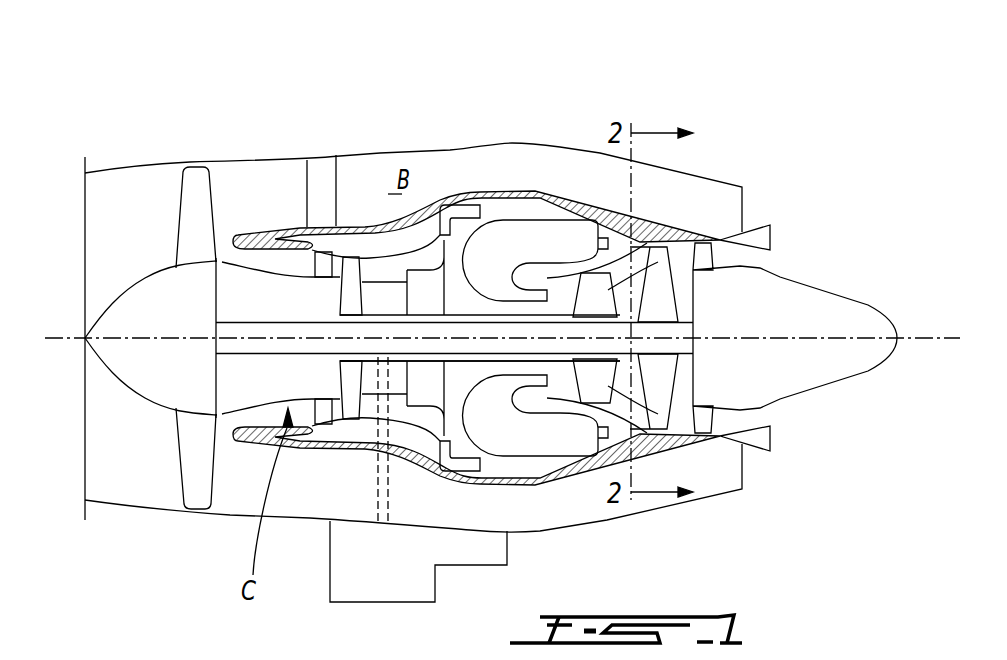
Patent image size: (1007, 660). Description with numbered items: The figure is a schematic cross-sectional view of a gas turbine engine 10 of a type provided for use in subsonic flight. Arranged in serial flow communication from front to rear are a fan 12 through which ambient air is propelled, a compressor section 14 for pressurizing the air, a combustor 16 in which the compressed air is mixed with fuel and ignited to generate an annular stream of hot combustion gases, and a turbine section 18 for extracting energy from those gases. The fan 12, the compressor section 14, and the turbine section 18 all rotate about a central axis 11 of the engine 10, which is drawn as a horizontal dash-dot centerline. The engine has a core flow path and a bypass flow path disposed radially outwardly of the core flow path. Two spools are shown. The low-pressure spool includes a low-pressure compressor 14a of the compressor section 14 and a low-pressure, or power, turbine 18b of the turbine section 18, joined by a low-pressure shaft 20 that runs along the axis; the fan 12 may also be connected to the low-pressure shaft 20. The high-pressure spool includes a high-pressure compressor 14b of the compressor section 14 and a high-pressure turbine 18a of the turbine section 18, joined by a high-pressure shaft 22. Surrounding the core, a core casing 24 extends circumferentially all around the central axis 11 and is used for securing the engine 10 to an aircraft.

The gas turbine engine 10 is at (650, 102).
The central axis 11 is at (925, 338).
The fan 12 is at (193, 447).
The compressor section 14 is at (378, 268).
The low-pressure compressor 14a is at (358, 388).
The high-pressure compressor 14b is at (428, 383).
The combustor 16 is at (537, 232).
The turbine section 18 is at (657, 393).
The high-pressure turbine 18a is at (596, 390).
The low-pressure turbine 18b is at (690, 378).
The low-pressure shaft 20 is at (256, 356).
The high-pressure shaft 22 is at (472, 362).
The core casing 24 is at (676, 226).